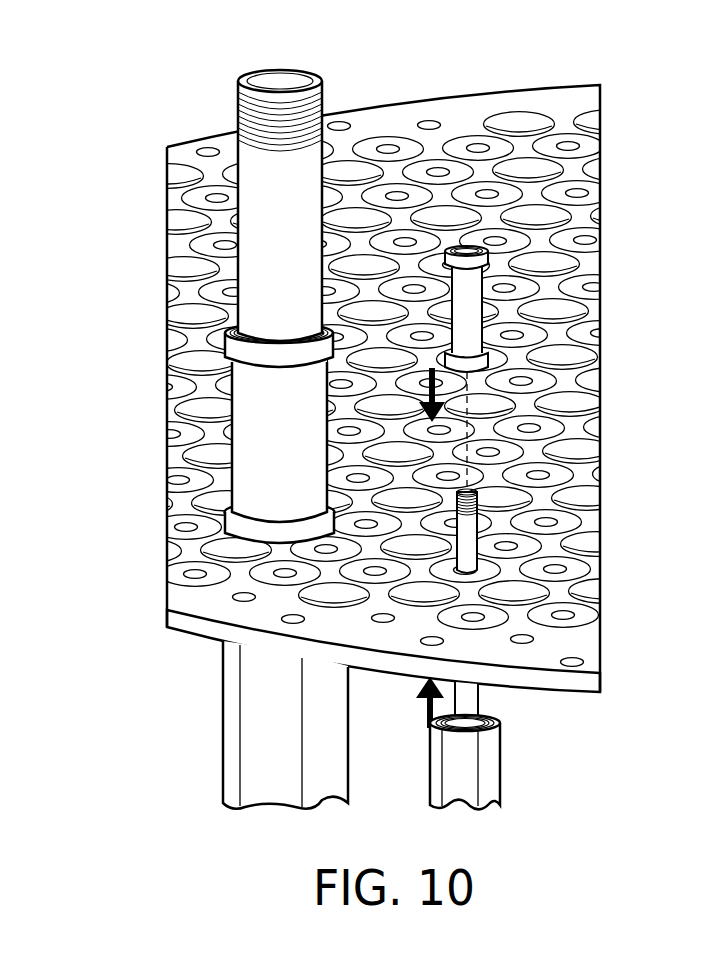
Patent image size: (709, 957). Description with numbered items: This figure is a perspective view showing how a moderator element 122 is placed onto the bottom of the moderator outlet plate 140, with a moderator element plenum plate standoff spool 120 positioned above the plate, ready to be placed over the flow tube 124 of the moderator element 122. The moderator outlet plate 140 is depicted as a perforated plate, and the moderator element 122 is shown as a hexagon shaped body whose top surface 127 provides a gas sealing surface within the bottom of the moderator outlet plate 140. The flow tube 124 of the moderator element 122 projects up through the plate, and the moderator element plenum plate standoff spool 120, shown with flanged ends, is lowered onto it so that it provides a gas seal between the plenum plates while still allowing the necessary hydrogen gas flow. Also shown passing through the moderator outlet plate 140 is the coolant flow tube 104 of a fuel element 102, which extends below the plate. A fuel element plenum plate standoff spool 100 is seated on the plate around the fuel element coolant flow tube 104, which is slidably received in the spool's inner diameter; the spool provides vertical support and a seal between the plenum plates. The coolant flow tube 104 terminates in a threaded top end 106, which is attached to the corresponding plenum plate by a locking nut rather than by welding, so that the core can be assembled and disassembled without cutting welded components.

The fuel element plenum plate standoff spool 100 is at (253, 430).
The fuel element 102 is at (260, 725).
The fuel element coolant flow tube 104 is at (257, 222).
The threaded top end 106 is at (311, 101).
The moderator element plenum plate standoff spool 120 is at (475, 305).
The moderator element 122 is at (492, 780).
The flow tube 124 is at (467, 533).
The top surface 127 is at (490, 716).
The moderator outlet plate 140 is at (547, 652).